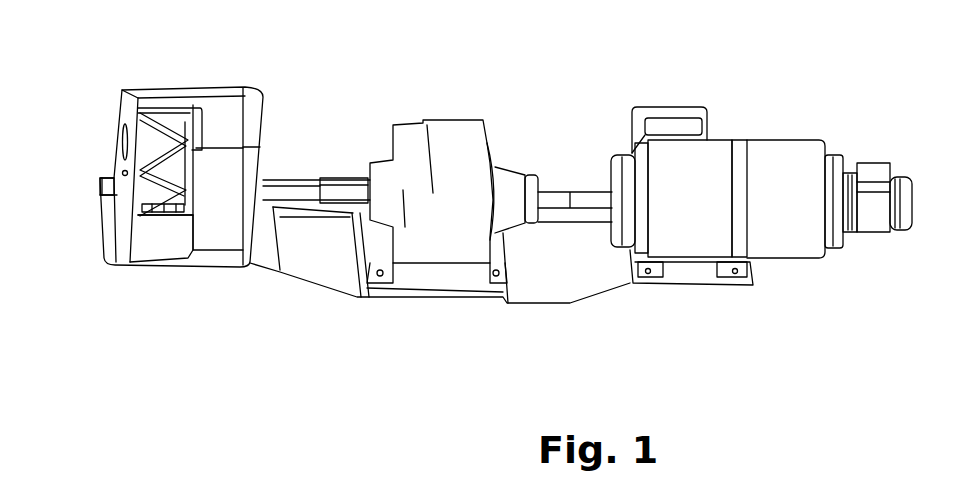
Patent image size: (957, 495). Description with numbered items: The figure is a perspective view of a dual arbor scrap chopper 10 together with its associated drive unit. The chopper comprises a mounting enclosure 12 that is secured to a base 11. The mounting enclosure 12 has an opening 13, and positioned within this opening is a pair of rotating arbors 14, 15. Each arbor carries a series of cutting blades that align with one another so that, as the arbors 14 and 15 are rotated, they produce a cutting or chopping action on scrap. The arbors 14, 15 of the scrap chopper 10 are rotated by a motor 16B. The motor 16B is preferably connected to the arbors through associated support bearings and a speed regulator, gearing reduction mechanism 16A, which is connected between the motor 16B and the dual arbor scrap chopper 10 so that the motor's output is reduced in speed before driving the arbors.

The dual arbor scrap chopper 10 is at (228, 67).
The base 11 is at (263, 274).
The mounting enclosure 12 is at (227, 127).
The opening 13 is at (162, 240).
The rotating arbor 14 is at (153, 140).
The rotating arbor 15 is at (150, 196).
The gearing reduction mechanism 16A is at (450, 145).
The motor 16B is at (707, 153).